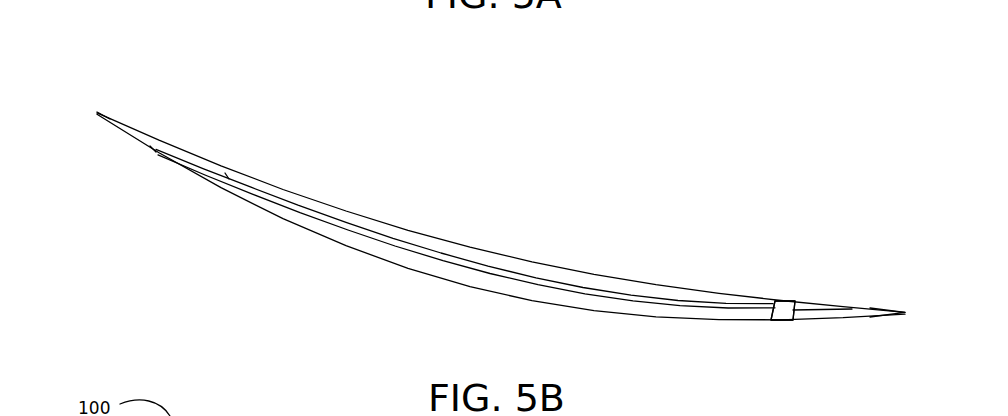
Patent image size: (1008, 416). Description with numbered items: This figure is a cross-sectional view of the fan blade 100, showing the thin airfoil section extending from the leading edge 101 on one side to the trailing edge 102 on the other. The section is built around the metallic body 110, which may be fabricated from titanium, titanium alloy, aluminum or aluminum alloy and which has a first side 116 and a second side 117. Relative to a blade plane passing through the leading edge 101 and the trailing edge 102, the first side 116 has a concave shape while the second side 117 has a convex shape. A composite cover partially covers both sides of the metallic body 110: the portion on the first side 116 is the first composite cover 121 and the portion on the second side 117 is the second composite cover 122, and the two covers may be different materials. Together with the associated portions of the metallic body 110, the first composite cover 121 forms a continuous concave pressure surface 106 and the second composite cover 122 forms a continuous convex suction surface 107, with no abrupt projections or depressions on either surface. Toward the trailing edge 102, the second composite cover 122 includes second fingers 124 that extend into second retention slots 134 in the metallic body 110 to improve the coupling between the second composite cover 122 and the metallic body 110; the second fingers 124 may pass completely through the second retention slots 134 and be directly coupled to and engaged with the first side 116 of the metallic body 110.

The fan blade 100 is at (183, 63).
The leading edge 101 is at (95, 113).
The trailing edge 102 is at (905, 312).
The concave pressure surface 106 is at (447, 217).
The convex suction surface 107 is at (422, 292).
The metallic body 110 is at (151, 148).
The first side 116 is at (395, 242).
The second side 117 is at (400, 252).
The first composite cover 121 is at (557, 273).
The second composite cover 122 is at (578, 298).
The second fingers 124 is at (773, 315).
The second retention slots 134 is at (787, 303).